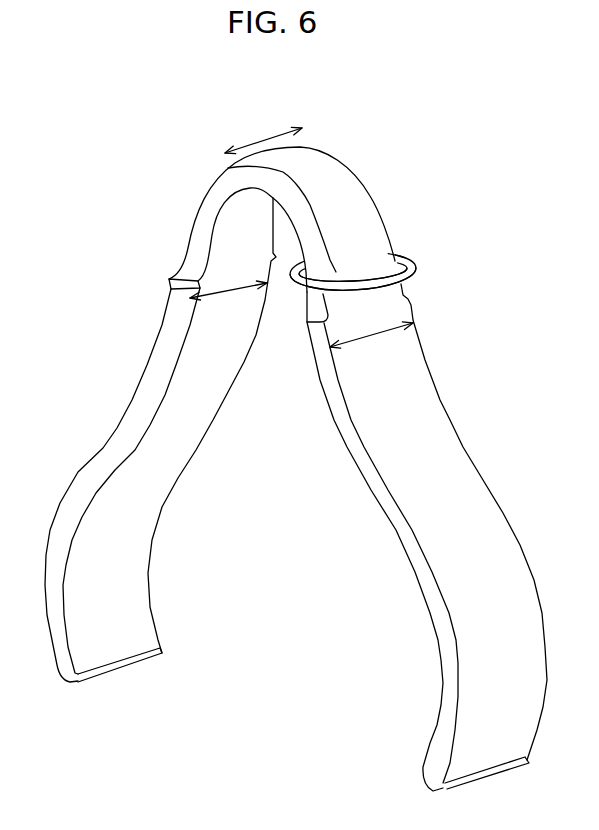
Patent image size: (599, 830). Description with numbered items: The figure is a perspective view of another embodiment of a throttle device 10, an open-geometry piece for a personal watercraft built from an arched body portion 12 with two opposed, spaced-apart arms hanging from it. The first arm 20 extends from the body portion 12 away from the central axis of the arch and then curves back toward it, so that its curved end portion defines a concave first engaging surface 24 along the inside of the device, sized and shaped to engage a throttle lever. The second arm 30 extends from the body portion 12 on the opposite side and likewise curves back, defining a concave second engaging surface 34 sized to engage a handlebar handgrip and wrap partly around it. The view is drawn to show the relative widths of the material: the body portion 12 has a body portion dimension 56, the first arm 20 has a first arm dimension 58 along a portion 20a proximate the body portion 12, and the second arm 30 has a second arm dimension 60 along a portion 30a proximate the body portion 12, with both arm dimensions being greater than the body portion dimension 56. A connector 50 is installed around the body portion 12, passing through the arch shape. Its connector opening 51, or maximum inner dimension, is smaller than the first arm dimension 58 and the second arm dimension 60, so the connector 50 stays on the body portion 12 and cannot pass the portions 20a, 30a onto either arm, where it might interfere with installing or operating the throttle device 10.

The throttle device 10 is at (112, 158).
The body portion 12 is at (345, 185).
The first arm 20 is at (429, 537).
The portion of first arm 20a is at (400, 310).
The first engaging surface 24 is at (432, 657).
The second arm 30 is at (160, 440).
The portion of second arm 30a is at (177, 288).
The second engaging surface 34 is at (105, 557).
The connector 50 is at (412, 270).
The connector opening 51 is at (394, 254).
The body portion dimension 56 is at (268, 133).
The first arm dimension 58 is at (378, 332).
The second arm dimension 60 is at (217, 293).